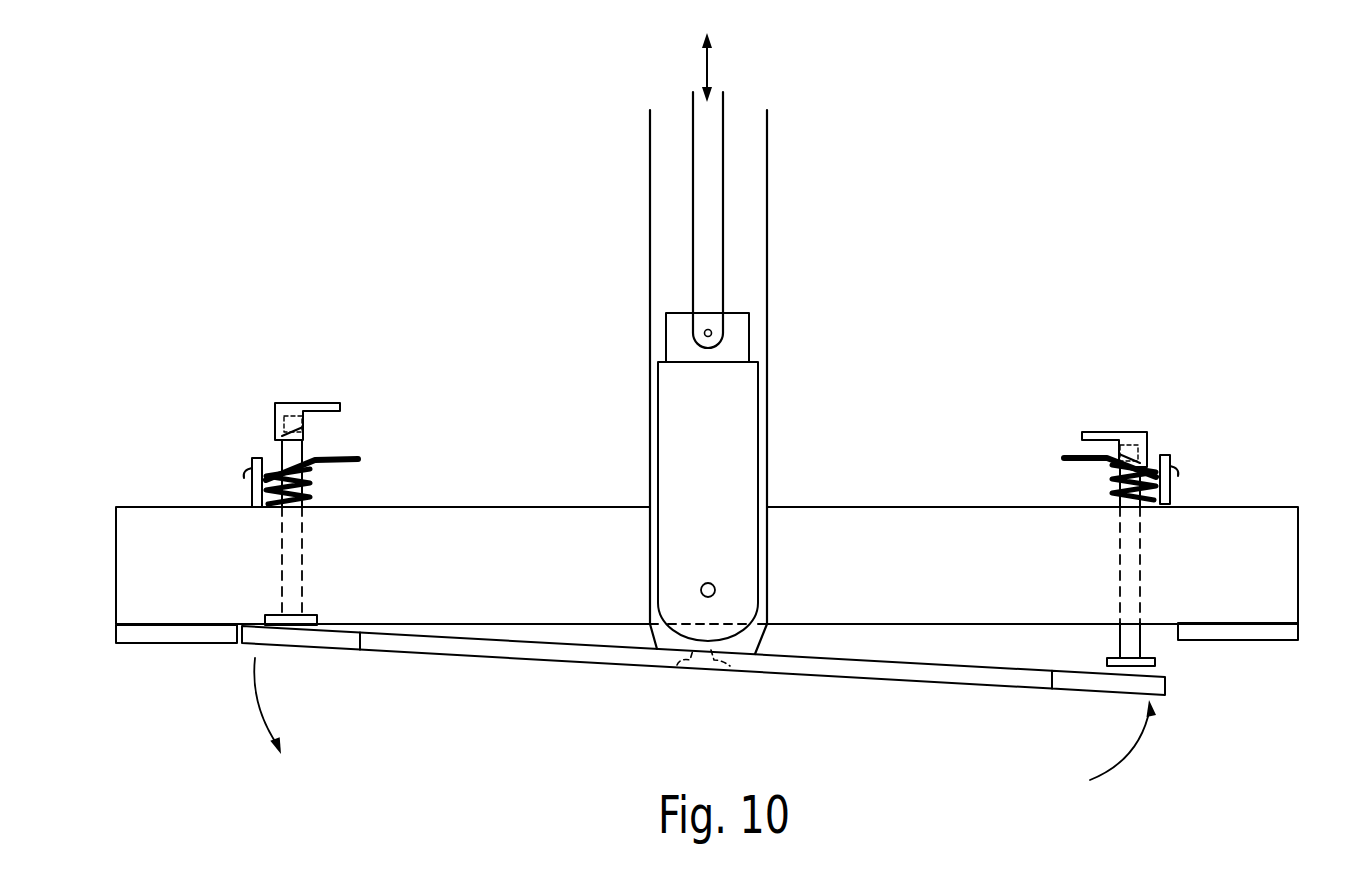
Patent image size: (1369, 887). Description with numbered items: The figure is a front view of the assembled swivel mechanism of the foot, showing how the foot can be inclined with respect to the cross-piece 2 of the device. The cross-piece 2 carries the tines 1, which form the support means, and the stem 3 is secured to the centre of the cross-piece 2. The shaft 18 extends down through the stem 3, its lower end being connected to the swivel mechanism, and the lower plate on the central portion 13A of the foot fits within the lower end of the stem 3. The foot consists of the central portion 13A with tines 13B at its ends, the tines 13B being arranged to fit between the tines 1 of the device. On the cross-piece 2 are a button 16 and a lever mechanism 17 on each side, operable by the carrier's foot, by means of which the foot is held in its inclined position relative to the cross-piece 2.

The tines 1 is at (137, 635).
The cross-piece 2 is at (557, 527).
The stem 3 is at (768, 228).
The central portion 13A is at (877, 668).
The tines 13B is at (340, 642).
The button 16 is at (293, 411).
The lever 17 is at (362, 458).
The shaft 18 is at (707, 108).